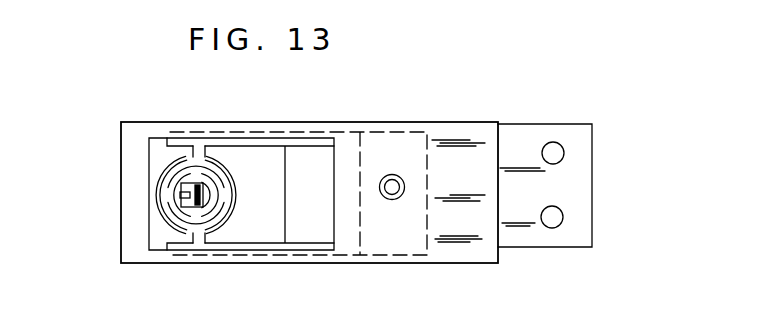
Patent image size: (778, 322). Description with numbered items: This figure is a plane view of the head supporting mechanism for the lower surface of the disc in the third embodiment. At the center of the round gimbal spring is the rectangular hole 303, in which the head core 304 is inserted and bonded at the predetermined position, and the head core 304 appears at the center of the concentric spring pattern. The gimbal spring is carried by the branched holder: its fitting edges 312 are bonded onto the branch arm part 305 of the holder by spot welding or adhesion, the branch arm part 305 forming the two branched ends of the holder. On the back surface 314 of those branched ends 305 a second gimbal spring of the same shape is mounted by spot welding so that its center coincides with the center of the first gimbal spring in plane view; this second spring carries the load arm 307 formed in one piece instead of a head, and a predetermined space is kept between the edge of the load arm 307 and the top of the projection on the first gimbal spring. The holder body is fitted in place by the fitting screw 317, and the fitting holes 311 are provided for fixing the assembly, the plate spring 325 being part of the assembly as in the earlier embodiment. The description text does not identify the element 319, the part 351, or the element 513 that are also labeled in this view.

The rectangular hole 303 is at (204, 183).
The head core 304 is at (200, 212).
The branch arm part 305 is at (257, 150).
The load arm 307 is at (183, 194).
The fitting hole 311 is at (553, 142).
The fitting edge 312 is at (173, 140).
The back surface 314 is at (180, 140).
The fitting screw 317 is at (392, 174).
The main body 319 is at (447, 122).
The plate spring 325 is at (527, 125).
The mounting tab 351 is at (592, 143).
The dashed enclosure 513 is at (238, 190).